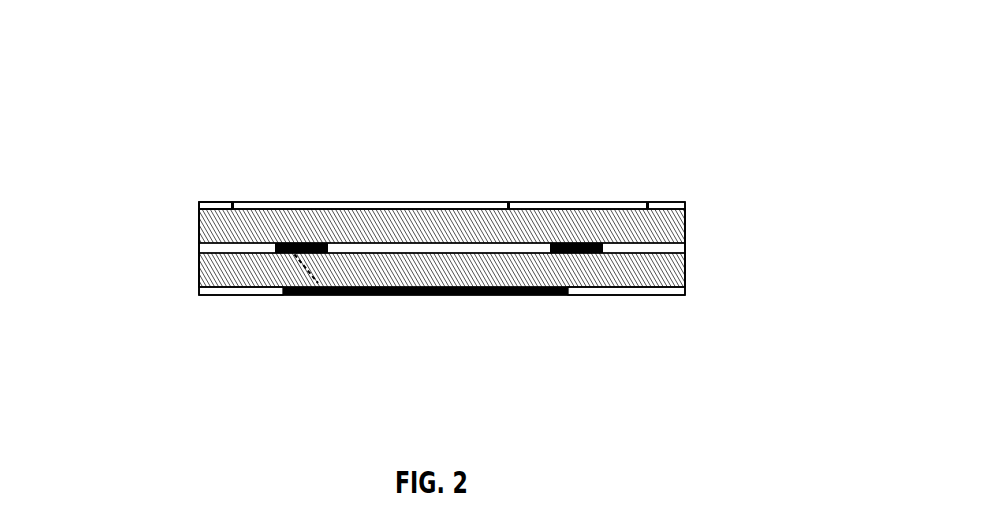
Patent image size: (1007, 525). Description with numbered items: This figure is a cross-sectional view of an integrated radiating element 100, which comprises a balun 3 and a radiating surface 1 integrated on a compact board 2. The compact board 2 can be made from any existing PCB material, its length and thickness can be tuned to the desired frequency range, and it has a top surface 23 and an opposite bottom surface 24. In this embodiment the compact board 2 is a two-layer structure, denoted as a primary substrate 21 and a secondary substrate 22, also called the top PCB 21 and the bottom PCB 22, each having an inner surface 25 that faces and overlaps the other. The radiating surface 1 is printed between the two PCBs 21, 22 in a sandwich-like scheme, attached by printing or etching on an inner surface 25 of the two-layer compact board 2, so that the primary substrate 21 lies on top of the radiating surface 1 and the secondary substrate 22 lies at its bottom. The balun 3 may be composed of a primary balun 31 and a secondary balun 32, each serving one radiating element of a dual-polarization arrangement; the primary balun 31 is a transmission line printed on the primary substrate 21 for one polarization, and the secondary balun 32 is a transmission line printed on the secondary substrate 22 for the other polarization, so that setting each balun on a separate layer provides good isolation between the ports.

The integrated radiating element 100 is at (344, 155).
The radiating surface 1 is at (563, 250).
The compact board 2 is at (125, 308).
The primary substrate 21 is at (199, 230).
The secondary substrate 22 is at (218, 268).
The top surface 23 is at (199, 203).
The bottom surface 24 is at (210, 295).
The inner surface 25 is at (535, 248).
The balun 3 is at (757, 350).
The primary balun 31 is at (612, 205).
The secondary balun 32 is at (568, 295).